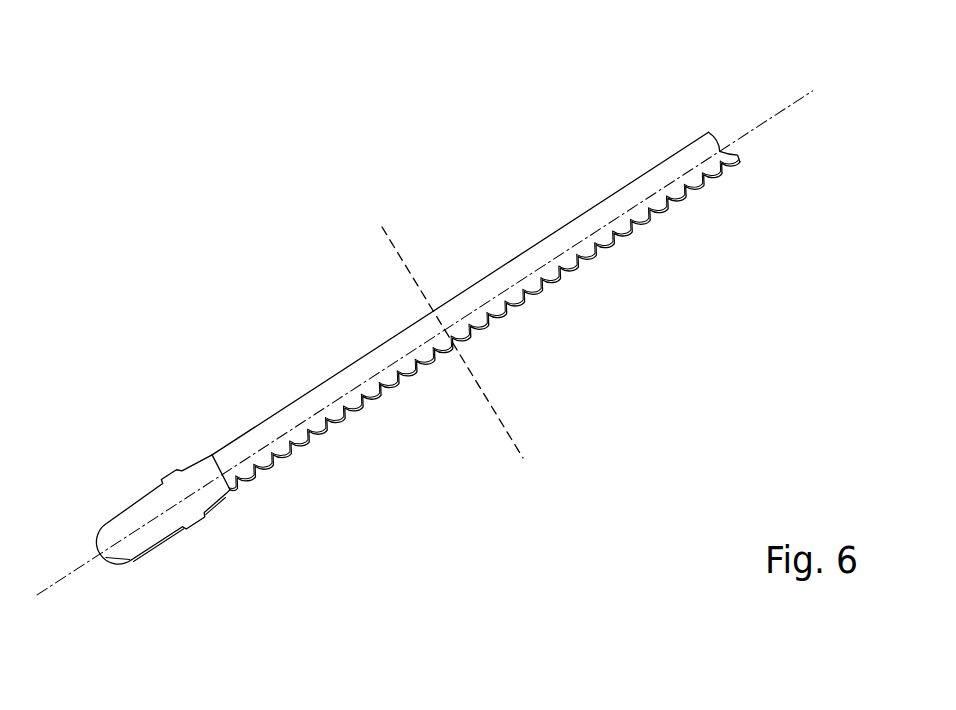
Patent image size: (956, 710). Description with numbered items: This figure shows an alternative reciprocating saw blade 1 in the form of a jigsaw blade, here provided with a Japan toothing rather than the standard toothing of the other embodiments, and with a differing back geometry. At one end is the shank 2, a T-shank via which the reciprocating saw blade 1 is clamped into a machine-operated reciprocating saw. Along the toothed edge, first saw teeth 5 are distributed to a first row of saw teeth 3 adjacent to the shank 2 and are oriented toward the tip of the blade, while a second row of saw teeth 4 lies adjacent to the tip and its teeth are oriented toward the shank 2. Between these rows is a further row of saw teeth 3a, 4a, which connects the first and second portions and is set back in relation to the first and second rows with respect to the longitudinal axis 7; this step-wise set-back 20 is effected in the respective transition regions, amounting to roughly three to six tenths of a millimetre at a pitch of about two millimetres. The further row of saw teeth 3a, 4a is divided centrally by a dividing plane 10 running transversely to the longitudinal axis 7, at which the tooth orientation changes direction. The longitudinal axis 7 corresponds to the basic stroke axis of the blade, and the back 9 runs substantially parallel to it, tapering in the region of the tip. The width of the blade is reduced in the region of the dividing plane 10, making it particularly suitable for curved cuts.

The reciprocating saw blade 1 is at (306, 238).
The shank 2 is at (161, 512).
The first row of saw teeth 3 is at (332, 420).
The further row of saw teeth 3a is at (427, 359).
The second row of saw teeth 4 is at (586, 254).
The further row of saw teeth 4a is at (481, 324).
The first saw teeth 5 is at (725, 147).
The longitudinal axis 7 is at (425, 343).
The back 9 is at (460, 293).
The dividing plane 10 is at (398, 252).
The set-back 20 is at (391, 382).